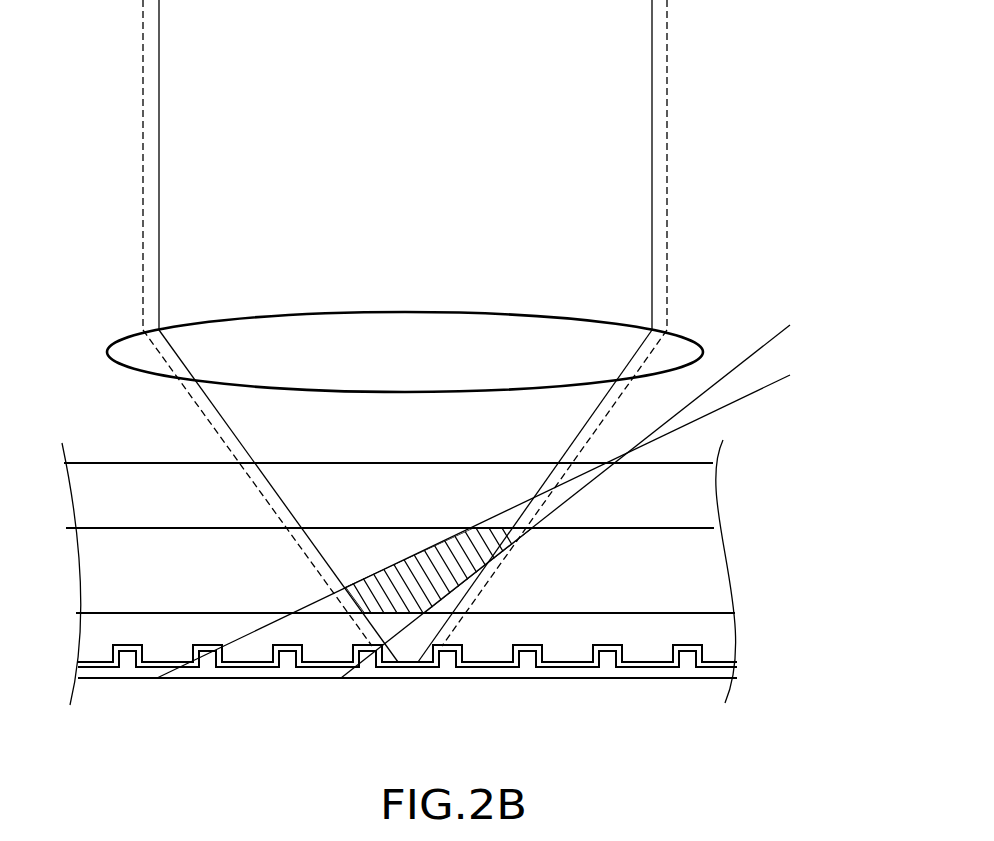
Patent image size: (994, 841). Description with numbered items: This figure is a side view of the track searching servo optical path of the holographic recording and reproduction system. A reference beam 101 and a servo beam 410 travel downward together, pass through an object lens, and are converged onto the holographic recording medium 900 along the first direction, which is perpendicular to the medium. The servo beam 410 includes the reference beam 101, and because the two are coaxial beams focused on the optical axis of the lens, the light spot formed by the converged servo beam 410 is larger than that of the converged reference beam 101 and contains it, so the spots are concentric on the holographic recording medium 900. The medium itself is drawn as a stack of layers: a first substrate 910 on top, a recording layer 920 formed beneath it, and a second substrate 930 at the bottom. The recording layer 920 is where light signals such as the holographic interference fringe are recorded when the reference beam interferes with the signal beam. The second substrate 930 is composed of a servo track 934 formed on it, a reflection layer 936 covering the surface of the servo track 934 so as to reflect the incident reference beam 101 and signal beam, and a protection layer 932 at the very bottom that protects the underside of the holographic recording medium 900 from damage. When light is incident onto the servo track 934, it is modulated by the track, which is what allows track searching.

The reference beam 101 is at (632, 125).
The servo beam 410 is at (660, 215).
The holographic recording medium 900 is at (455, 589).
The first substrate 910 is at (680, 500).
The recording layer 920 is at (693, 568).
The second substrate 930 is at (710, 637).
The protection layer 932 is at (568, 680).
The servo track 934 is at (600, 645).
The reflection layer 936 is at (650, 664).